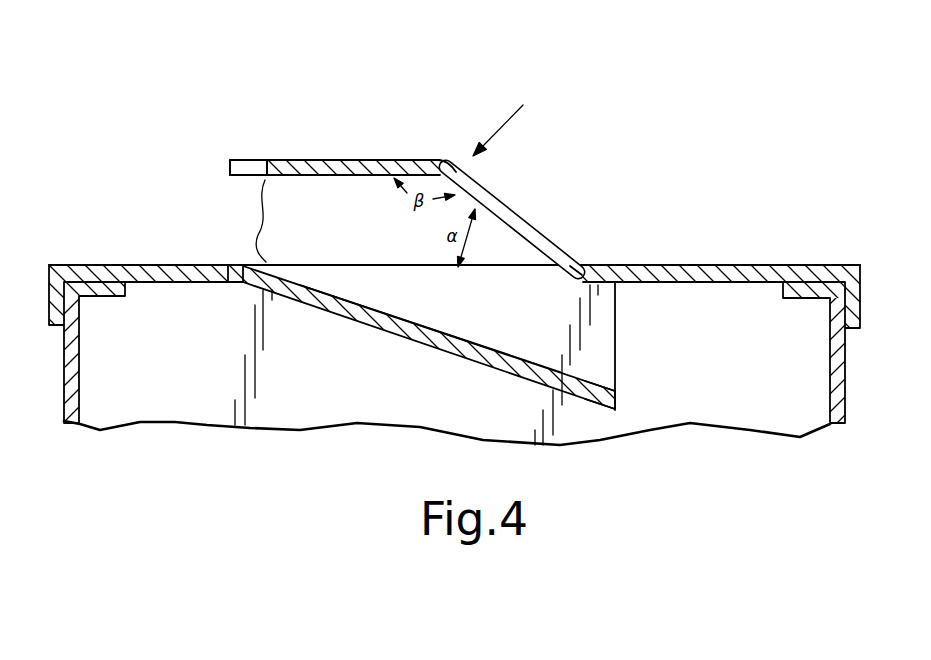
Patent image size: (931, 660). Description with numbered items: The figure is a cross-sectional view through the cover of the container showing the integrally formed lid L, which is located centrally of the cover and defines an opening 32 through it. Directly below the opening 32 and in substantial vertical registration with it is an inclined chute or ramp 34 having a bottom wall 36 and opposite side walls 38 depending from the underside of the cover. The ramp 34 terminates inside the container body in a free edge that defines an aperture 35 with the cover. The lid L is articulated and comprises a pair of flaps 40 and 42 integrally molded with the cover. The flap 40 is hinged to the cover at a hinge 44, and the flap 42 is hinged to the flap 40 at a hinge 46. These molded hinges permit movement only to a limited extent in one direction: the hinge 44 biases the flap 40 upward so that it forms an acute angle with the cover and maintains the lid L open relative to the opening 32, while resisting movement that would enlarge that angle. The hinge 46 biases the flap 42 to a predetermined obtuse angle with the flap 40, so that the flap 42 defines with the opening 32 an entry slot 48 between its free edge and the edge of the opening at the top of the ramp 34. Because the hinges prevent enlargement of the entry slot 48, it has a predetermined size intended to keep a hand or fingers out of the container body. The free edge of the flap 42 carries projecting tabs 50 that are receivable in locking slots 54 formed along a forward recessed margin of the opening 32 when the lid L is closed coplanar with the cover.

The opening 32 is at (355, 265).
The inclined chute or ramp 34 is at (420, 343).
The aperture 35 is at (643, 287).
The bottom wall 36 is at (455, 338).
The side walls 38 is at (610, 386).
The flap 40 is at (483, 192).
The flap 42 is at (383, 160).
The hinge 44 is at (582, 268).
The hinge 46 is at (418, 158).
The entry slot 48 is at (255, 220).
The projecting tabs 50 is at (282, 160).
The locking slots 54 is at (215, 265).
The lid L is at (504, 115).